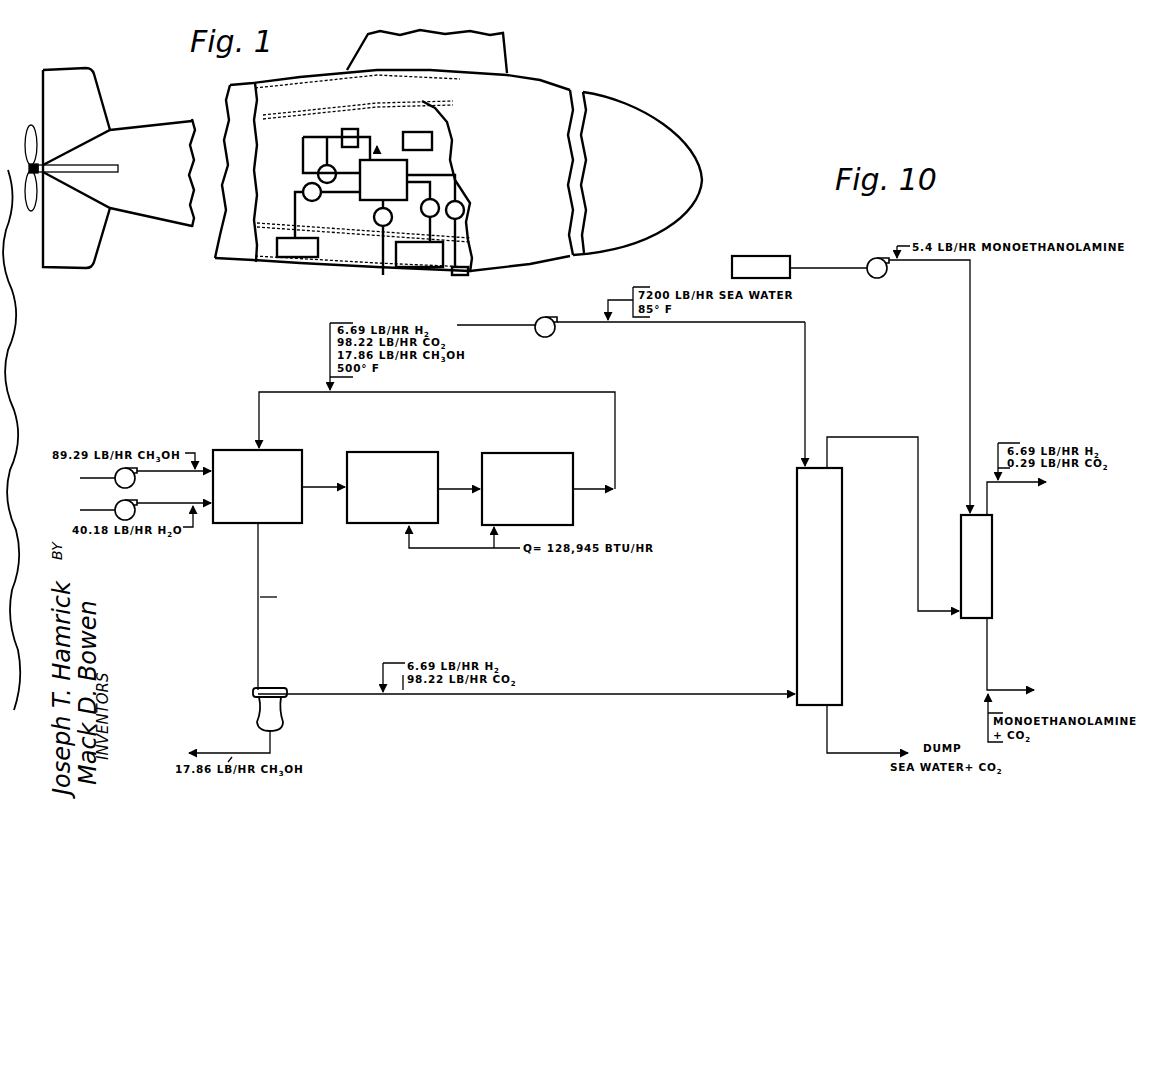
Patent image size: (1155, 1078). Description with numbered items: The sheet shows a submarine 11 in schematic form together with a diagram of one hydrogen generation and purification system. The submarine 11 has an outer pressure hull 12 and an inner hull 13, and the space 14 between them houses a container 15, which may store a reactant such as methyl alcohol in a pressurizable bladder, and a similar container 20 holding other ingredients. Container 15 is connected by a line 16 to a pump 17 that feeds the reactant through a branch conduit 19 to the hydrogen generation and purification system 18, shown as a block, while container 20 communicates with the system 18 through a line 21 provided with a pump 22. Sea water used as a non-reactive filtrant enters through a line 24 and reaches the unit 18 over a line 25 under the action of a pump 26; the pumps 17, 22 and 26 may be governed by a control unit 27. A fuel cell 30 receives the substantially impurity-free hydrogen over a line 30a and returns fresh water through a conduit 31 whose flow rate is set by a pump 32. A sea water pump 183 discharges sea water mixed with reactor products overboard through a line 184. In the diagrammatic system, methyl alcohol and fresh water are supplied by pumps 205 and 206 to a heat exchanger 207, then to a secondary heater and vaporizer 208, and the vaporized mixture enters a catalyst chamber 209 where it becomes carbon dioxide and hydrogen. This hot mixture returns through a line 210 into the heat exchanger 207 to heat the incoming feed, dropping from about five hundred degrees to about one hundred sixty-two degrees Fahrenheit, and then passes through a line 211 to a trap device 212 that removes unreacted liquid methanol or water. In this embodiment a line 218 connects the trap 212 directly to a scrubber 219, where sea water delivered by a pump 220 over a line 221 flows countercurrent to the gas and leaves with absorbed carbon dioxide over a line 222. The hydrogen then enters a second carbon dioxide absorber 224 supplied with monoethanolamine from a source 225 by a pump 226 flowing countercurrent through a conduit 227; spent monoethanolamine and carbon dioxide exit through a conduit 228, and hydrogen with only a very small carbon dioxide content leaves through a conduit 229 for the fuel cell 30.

In FIG. 1, the submarine 11 is at (300, 273).
In FIG. 1, the outer pressure hull 12 is at (313, 78).
In FIG. 1, the inner hull 13 is at (323, 106).
In FIG. 1, the space 14 is at (354, 255).
In FIG. 1, the container 15 is at (417, 258).
In FIG. 1, the line 16 is at (428, 228).
In FIG. 1, the pump 17 is at (433, 200).
In FIG. 1, the hydrogen generation and purification system 18 is at (368, 201).
In FIG. 1, the sea water pump 183 is at (380, 228).
In FIG. 1, the line 184 is at (387, 274).
In FIG. 1, the branch conduit 19 is at (424, 180).
In FIG. 1, the container 20 is at (290, 248).
In FIG. 1, the line 21 is at (295, 212).
In FIG. 1, the pump 22 is at (304, 189).
In FIG. 1, the line 24 is at (460, 276).
In FIG. 1, the line 25 is at (460, 172).
In FIG. 1, the pump 26 is at (464, 210).
In FIG. 1, the control unit 27 is at (428, 140).
In FIG. 1, the fuel cell 30 is at (356, 130).
In FIG. 1, the line 30a is at (371, 144).
In FIG. 1, the conduit 31 is at (303, 146).
In FIG. 1, the pump 32 is at (331, 172).
In FIG. 10, the pump 205 is at (116, 484).
In FIG. 10, the pump 206 is at (137, 502).
In FIG. 10, the heat exchanger 207 is at (238, 449).
In FIG. 10, the secondary heater and vaporizer 208 is at (411, 451).
In FIG. 10, the catalyst chamber 209 is at (550, 453).
In FIG. 10, the line 210 is at (545, 392).
In FIG. 10, the line 211 is at (255, 638).
In FIG. 10, the trap device 212 is at (290, 720).
In FIG. 10, the line 218 is at (652, 693).
In FIG. 10, the scrubber 219 is at (796, 655).
In FIG. 10, the pump 220 is at (548, 318).
In FIG. 10, the line 221 is at (720, 323).
In FIG. 10, the line 222 is at (830, 740).
In FIG. 10, the second carbon dioxide absorber 224 is at (993, 568).
In FIG. 10, the source 225 is at (782, 258).
In FIG. 10, the pump 226 is at (870, 278).
In FIG. 10, the conduit 227 is at (970, 365).
In FIG. 10, the conduit 228 is at (988, 651).
In FIG. 10, the conduit 229 is at (990, 482).